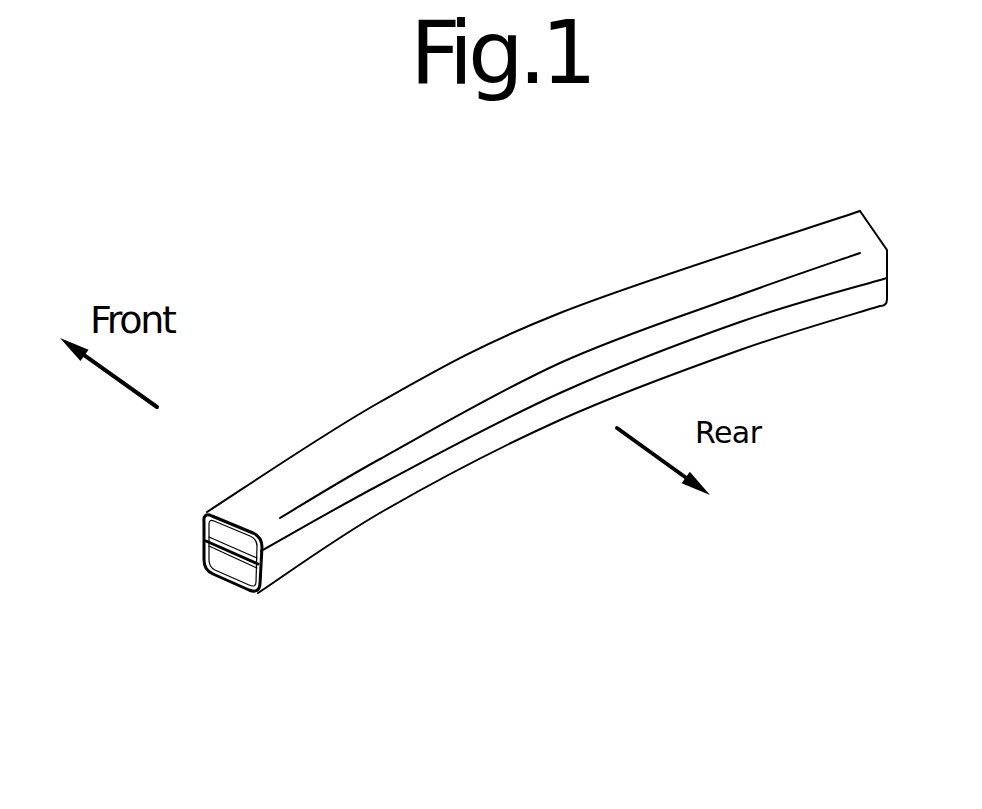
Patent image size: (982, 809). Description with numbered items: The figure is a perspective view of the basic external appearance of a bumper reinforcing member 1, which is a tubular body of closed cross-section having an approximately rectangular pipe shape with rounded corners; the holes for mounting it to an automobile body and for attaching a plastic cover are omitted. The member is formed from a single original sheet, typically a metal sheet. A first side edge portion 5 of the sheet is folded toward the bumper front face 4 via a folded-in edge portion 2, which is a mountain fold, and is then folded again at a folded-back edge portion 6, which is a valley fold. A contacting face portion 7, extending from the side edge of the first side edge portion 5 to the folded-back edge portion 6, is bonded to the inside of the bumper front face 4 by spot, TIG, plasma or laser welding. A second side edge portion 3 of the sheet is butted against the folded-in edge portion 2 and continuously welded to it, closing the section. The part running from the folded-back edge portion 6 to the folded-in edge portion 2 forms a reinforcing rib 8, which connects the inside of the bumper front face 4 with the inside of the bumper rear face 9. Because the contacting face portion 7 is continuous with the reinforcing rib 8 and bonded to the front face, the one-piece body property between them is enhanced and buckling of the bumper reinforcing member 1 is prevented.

The bumper reinforcing member 1 is at (430, 375).
The folded-in edge portion 2 is at (262, 562).
The second side edge portion 3 is at (283, 566).
The bumper front face 4 is at (181, 511).
The first side edge portion 5 is at (229, 541).
The folded-back edge portion 6 is at (205, 533).
The contacting face portion 7 is at (212, 535).
The reinforcing rib 8 is at (239, 584).
The bumper rear face 9 is at (437, 492).